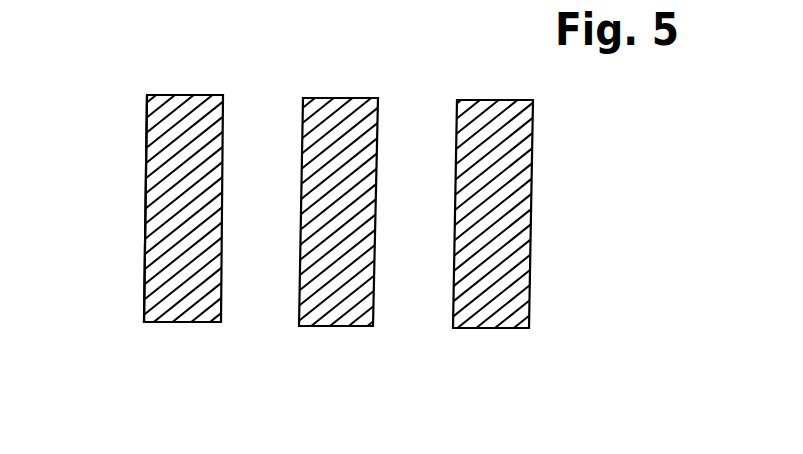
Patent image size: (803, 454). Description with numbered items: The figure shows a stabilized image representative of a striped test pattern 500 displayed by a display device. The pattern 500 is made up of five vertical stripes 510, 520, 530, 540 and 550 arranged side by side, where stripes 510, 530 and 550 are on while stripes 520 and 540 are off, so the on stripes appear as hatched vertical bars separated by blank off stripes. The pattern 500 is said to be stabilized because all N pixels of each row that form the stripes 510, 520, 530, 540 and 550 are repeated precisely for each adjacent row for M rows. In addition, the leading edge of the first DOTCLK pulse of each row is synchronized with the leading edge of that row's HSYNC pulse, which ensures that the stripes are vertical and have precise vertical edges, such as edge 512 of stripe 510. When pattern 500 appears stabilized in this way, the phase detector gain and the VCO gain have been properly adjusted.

The striped test pattern 500 is at (371, 211).
The vertical stripe 510 is at (176, 208).
The edge 512 is at (147, 167).
The vertical stripe 520 is at (181, 208).
The vertical stripe 530 is at (367, 80).
The vertical stripe 540 is at (451, 418).
The vertical stripe 550 is at (534, 80).